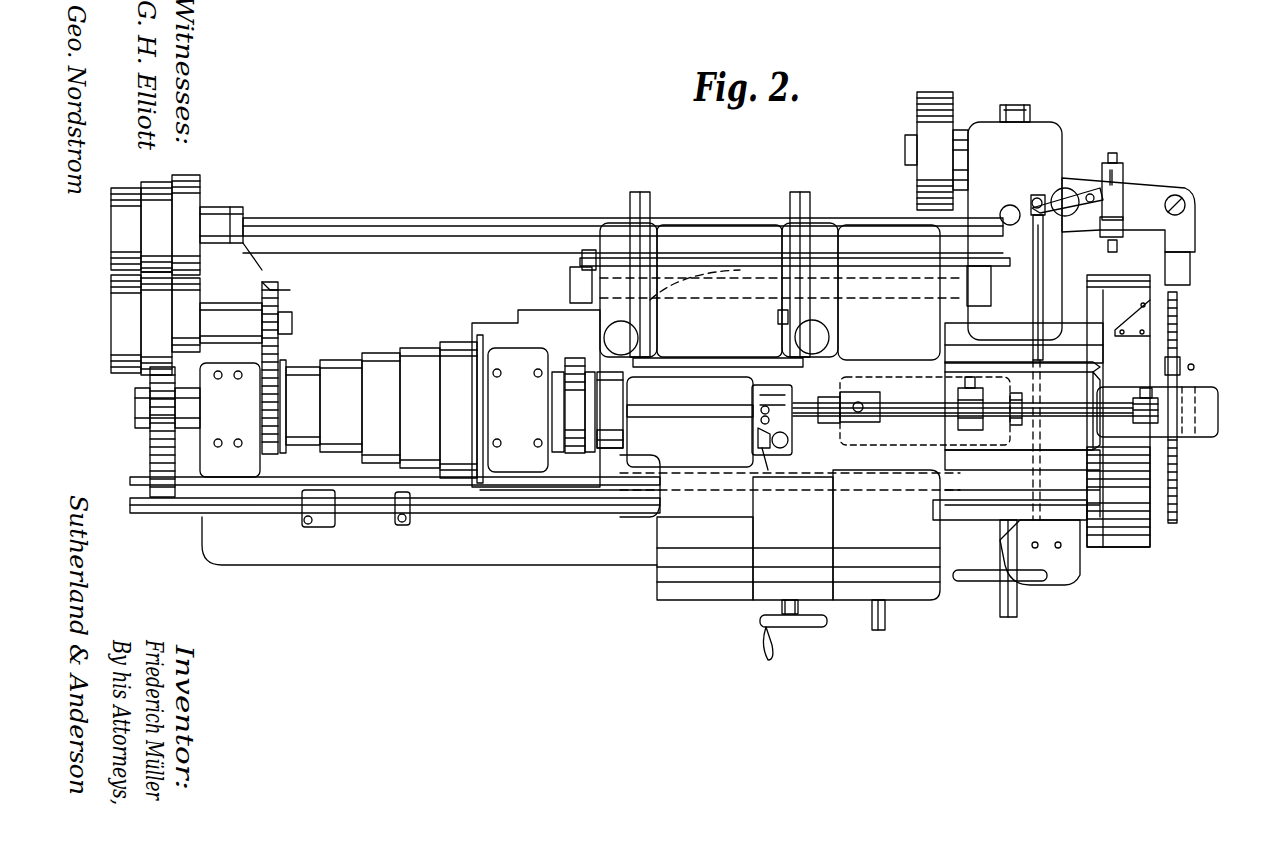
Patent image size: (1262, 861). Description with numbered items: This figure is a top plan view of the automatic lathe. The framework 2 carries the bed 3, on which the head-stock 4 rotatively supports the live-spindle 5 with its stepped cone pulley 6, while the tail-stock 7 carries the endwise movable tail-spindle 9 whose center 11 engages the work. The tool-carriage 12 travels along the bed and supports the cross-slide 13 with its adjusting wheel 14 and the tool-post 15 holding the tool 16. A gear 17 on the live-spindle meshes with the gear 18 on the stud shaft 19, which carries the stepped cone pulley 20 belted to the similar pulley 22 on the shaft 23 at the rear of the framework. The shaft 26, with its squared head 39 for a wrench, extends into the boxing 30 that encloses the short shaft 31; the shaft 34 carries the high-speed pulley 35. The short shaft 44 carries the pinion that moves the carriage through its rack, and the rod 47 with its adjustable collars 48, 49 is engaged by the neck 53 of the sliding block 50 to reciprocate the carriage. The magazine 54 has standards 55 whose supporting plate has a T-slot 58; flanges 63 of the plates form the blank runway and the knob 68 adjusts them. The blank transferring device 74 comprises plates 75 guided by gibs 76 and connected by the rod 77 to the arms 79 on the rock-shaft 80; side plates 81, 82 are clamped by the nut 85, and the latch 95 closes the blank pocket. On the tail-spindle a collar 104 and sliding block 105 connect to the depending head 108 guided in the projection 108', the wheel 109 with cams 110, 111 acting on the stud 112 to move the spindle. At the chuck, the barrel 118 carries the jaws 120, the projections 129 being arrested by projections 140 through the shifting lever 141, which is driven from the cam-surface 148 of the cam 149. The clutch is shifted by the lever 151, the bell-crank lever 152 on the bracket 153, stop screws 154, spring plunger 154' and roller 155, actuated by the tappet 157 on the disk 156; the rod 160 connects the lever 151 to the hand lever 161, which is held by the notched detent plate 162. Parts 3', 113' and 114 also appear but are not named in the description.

The framework 2 is at (578, 540).
The bed 3 is at (1024, 421).
The bed extension 3' is at (789, 527).
The head-stock 4 is at (321, 396).
The live-spindle 5 is at (600, 480).
The stepped cone pulley 6 is at (422, 409).
The tail-stock 7 is at (875, 385).
The tail-spindle 9 is at (1040, 520).
The center 11 is at (787, 414).
The tool-carriage 12 is at (886, 535).
The cross-slide 13 is at (793, 538).
The adjusting wheel 14 is at (795, 627).
The tool-post 15 is at (782, 448).
The tool 16 is at (760, 428).
The gear 17 is at (262, 460).
The gear 18 is at (275, 290).
The stud shaft 19 is at (292, 323).
The stepped cone pulley 20 is at (155, 323).
The stepped pulley 22 is at (177, 225).
The shaft 23 is at (393, 222).
The shaft 26 is at (970, 578).
The boxing 30 is at (1015, 231).
The stud shaft 31 is at (1015, 105).
The shaft 34 is at (905, 150).
The pulley 35 is at (942, 151).
The squared head 39 is at (1017, 605).
The short shaft 44 is at (885, 615).
The rod 47 is at (453, 513).
The adjustable projection 48 is at (320, 527).
The adjustable projection 49 is at (405, 527).
The sliding block 50 is at (330, 515).
The vertical extension 53 is at (335, 518).
The magazine 54 is at (718, 352).
The standards 55 is at (628, 238).
The T-slot 58 is at (918, 340).
The flange 63 is at (640, 378).
The thumb-piece 68 is at (716, 337).
The blank transferring device 74 is at (735, 225).
The plate 75 is at (640, 192).
The gib 76 is at (655, 262).
The rod 77 is at (708, 258).
The arms 79 is at (570, 285).
The rock-shaft 80 is at (760, 302).
The plate 81 is at (625, 282).
The plate 82 is at (740, 270).
The nut 85 is at (778, 320).
The detent 95 is at (700, 372).
The collar 104 is at (1075, 545).
The block 105 is at (1003, 525).
The depending head 108 is at (1134, 490).
The guide-projection 108' is at (1173, 388).
The wheel 109 is at (1160, 370).
The cam 110 is at (1145, 312).
The cam 111 is at (1140, 547).
The stud 112 is at (1194, 367).
The collar 113' is at (967, 395).
The nut 114 is at (860, 422).
The barrel 118 is at (612, 452).
The jaws 120 is at (612, 420).
The projections 129 is at (578, 345).
The projections 140 is at (548, 420).
The lever 141 is at (500, 360).
The cam-surface 148 is at (183, 450).
The cam 149 is at (148, 468).
The lever 151 is at (1075, 188).
The bell-crank lever 152 is at (1165, 262).
The bracket 153 is at (1140, 190).
The screws 154 is at (1135, 148).
The spring plunger 154' is at (1083, 228).
The stud 155 is at (1112, 155).
The disk 156 is at (1177, 463).
The tappet 157 is at (1172, 357).
The rod 160 is at (1033, 268).
The hand lever 161 is at (1008, 525).
The notched detent plate 162 is at (1060, 560).